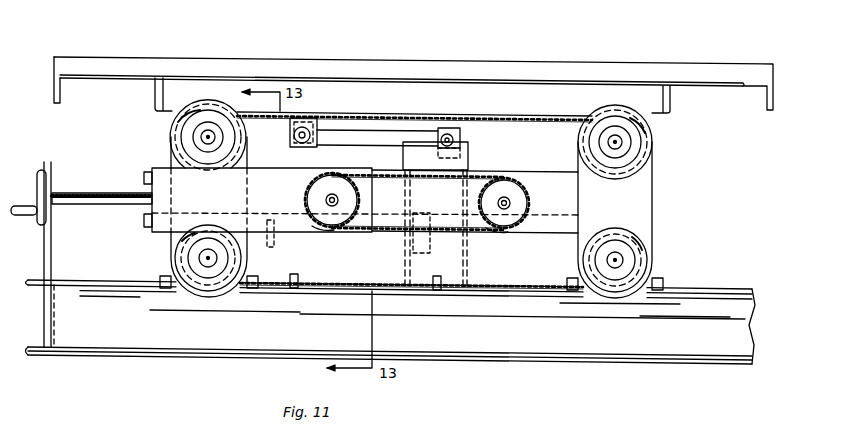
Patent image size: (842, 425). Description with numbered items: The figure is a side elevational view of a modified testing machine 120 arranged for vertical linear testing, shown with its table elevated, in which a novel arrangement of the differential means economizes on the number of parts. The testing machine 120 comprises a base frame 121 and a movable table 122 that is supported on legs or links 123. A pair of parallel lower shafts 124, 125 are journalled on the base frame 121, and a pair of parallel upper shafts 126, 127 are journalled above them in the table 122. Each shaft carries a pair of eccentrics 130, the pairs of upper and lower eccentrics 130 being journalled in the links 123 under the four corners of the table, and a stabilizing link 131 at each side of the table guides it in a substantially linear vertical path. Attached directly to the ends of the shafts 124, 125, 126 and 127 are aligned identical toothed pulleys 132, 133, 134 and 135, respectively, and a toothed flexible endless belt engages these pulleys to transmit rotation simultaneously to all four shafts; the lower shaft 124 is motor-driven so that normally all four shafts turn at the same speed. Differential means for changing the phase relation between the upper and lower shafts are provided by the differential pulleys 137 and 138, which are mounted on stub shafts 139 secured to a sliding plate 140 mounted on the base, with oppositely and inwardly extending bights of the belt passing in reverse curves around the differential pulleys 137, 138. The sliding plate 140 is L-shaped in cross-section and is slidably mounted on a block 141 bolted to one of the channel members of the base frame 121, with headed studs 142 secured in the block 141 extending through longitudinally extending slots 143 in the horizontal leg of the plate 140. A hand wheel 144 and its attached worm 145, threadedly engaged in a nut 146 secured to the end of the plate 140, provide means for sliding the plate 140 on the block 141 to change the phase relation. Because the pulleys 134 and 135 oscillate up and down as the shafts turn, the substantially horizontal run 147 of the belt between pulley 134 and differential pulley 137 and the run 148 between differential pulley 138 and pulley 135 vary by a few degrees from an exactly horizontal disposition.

The testing machine 120 is at (650, 366).
The base frame 121 is at (700, 287).
The movable table 122 is at (733, 77).
The links 123 is at (171, 158).
The lower shaft 124 is at (205, 258).
The lower shaft 125 is at (620, 260).
The upper shaft 126 is at (205, 137).
The upper shaft 127 is at (620, 143).
The eccentrics 130 is at (208, 135).
The stabilizing link 131 is at (361, 135).
The toothed pulley 132 is at (176, 253).
The toothed pulley 133 is at (642, 247).
The toothed pulley 134 is at (171, 120).
The toothed pulley 135 is at (634, 124).
The differential pulley 137 is at (322, 193).
The differential pulley 138 is at (528, 205).
The stub shafts 139 is at (332, 200).
The sliding plate 140 is at (481, 168).
The block 141 is at (352, 279).
The headed studs 142 is at (283, 233).
The slots 143 is at (318, 236).
The hand wheel 144 is at (42, 170).
The worm 145 is at (96, 190).
The nut 146 is at (157, 188).
The belt run 147 is at (272, 166).
The belt run 148 is at (546, 172).